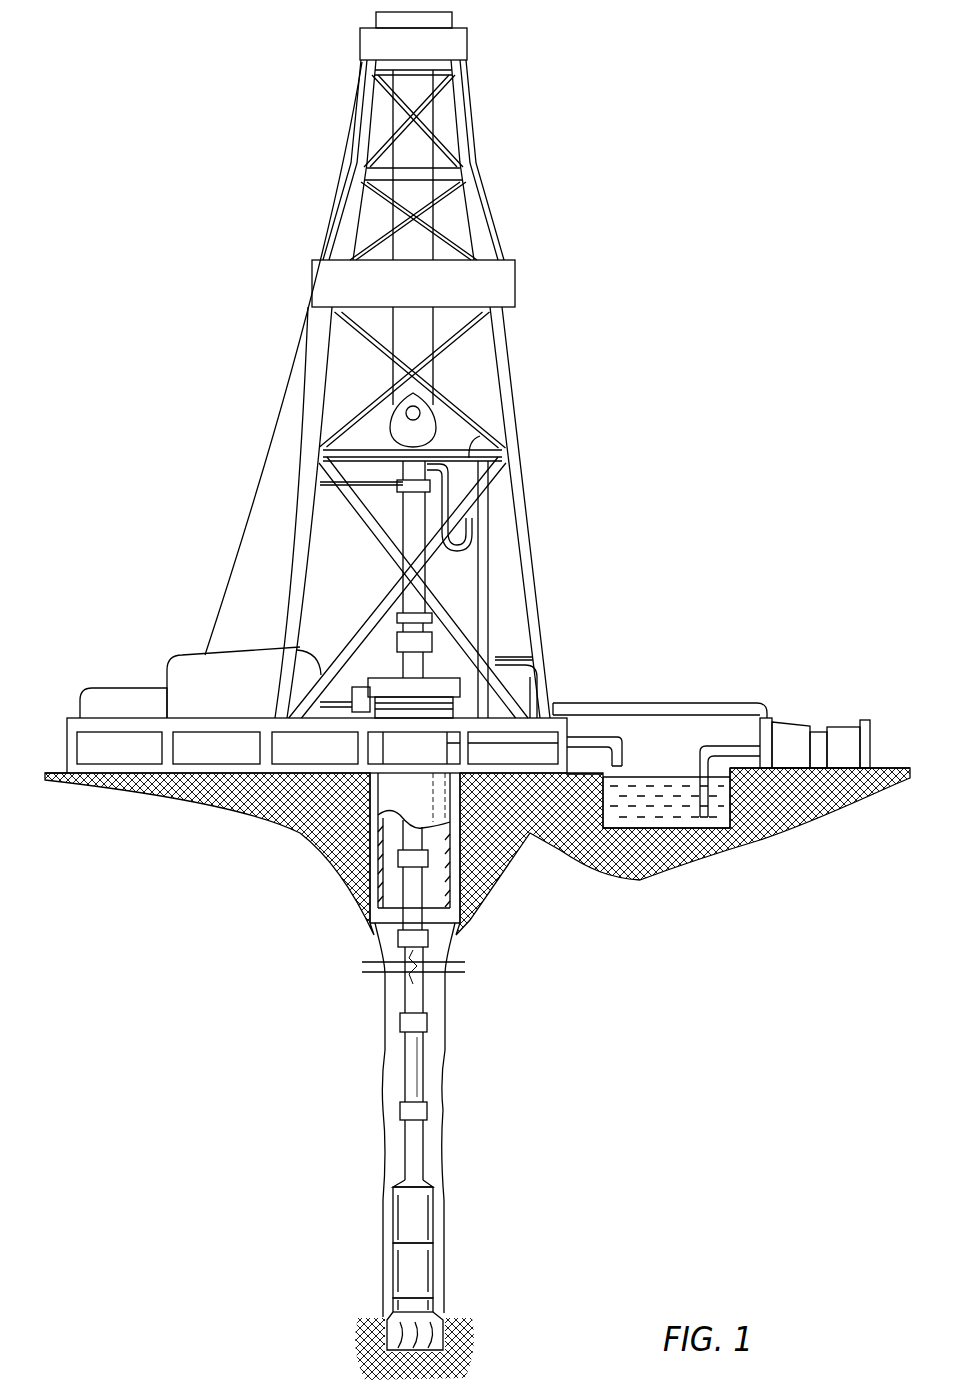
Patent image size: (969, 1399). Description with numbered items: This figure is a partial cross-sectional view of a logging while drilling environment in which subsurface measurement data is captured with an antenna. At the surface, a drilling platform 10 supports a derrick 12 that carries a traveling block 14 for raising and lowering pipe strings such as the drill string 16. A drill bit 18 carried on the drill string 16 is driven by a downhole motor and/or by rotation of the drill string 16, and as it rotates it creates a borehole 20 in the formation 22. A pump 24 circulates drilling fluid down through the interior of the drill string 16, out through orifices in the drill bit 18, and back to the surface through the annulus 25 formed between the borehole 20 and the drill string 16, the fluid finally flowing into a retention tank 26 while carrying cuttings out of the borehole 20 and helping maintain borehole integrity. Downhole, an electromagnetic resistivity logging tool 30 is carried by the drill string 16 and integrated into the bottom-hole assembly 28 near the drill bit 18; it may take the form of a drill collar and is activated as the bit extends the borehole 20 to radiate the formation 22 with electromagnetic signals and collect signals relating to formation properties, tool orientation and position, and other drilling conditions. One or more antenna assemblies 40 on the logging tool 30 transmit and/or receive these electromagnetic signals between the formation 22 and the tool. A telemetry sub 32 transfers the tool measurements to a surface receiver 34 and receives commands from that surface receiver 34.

The drilling platform 10 is at (67, 735).
The derrick 12 is at (478, 118).
The traveling block 14 is at (436, 413).
The drill string 16 is at (425, 990).
The drill bit 18 is at (444, 1314).
The borehole 20 is at (386, 1050).
The formation 22 is at (670, 700).
The pump 24 is at (790, 717).
The annulus 25 is at (392, 992).
The retention tank 26 is at (673, 818).
The bottom-hole assembly 28 is at (358, 1238).
The electromagnetic resistivity logging tool 30 is at (394, 1268).
The telemetry sub 32 is at (434, 1210).
The surface receiver 34 is at (434, 622).
The antenna assembly 40 is at (434, 1262).